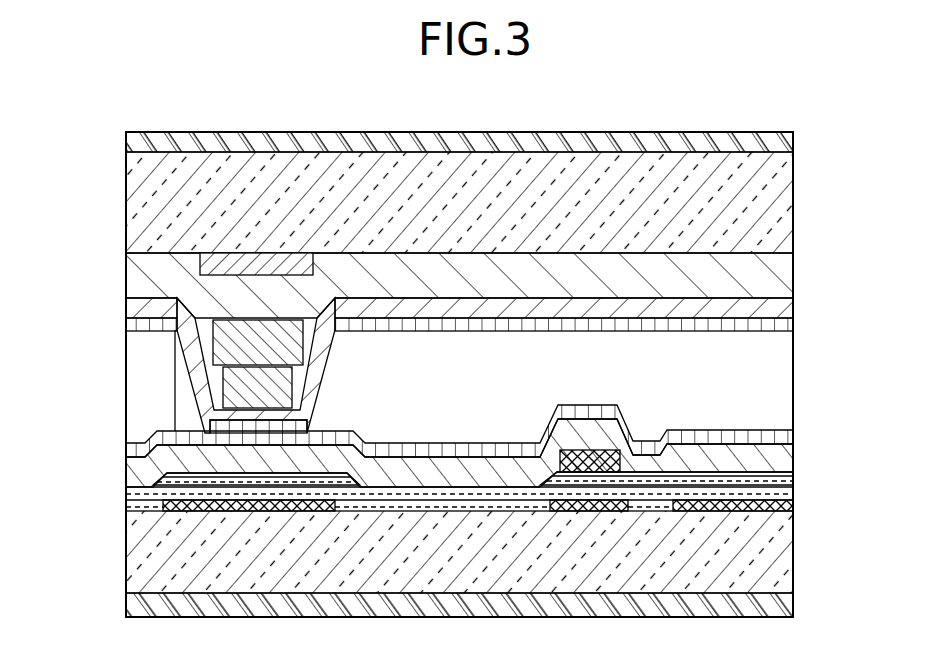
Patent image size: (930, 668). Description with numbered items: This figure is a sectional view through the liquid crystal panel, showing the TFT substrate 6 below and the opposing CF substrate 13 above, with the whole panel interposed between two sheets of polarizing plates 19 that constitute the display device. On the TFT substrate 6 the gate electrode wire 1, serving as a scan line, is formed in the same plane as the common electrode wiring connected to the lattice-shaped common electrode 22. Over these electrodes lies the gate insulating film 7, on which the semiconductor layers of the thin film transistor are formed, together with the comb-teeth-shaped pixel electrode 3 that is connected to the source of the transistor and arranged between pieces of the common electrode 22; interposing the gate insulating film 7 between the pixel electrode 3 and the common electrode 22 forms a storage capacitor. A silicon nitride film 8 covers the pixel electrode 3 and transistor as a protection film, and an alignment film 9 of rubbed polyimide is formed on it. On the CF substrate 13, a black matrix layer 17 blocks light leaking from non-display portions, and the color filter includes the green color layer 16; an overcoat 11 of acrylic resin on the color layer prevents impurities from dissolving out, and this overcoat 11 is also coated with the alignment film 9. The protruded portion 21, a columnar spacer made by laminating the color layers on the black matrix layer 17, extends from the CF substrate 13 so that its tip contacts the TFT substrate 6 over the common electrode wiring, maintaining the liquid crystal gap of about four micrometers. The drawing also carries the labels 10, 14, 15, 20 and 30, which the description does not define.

The gate electrode wire 1 is at (712, 497).
The pixel electrode 3 is at (600, 450).
The TFT substrate 6 is at (790, 556).
The gate insulating film 7 is at (790, 506).
The silicon nitride film 8 is at (790, 462).
The alignment film 9 is at (794, 326).
The planarization insulating film 10 is at (794, 383).
The overcoat 11 is at (785, 308).
The CF substrate 13 is at (794, 195).
The drain electrode 14 is at (278, 390).
The connection electrode 15 is at (296, 345).
The green color layer 16 is at (790, 268).
The black matrix layer 17 is at (255, 270).
The polarizing plates 19 is at (794, 143).
The TFT substrate section 20 is at (862, 430).
The protruded portion (spacer) 21 is at (174, 431).
The common electrode 22 is at (542, 489).
The organic EL element section 30 is at (862, 120).